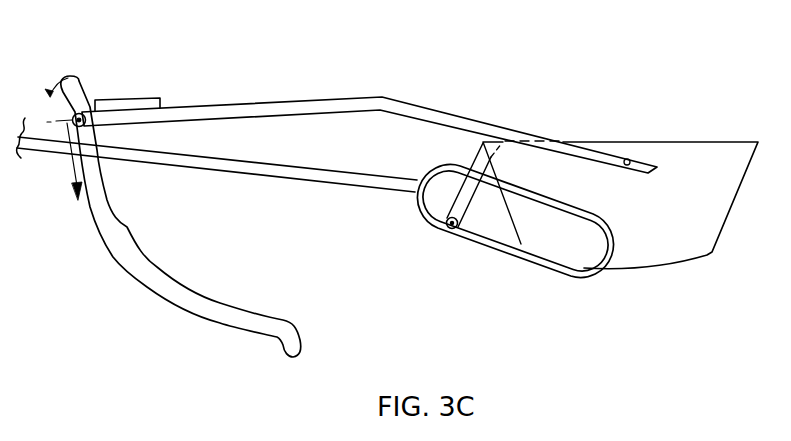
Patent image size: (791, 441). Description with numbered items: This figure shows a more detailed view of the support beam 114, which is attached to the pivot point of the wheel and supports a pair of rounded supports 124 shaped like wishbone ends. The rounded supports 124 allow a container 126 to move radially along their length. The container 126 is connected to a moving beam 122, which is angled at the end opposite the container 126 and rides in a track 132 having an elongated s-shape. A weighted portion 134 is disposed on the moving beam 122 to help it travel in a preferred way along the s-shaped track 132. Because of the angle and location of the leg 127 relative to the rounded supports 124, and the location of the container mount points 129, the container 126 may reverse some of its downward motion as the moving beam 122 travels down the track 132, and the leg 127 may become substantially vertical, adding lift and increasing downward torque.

The support beam 114 is at (271, 178).
The moving beam 122 is at (343, 97).
The rounded supports 124 is at (497, 256).
The container 126 is at (699, 140).
The leg 127 is at (447, 218).
The container mount points 129 is at (627, 158).
The track 132 is at (113, 257).
The weighted portion 134 is at (125, 99).